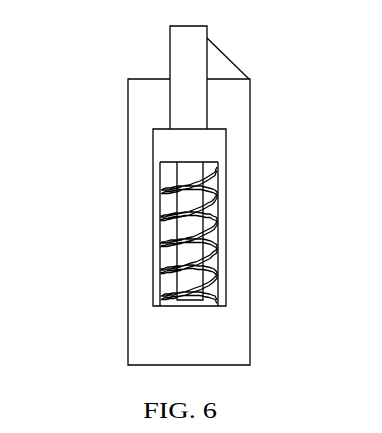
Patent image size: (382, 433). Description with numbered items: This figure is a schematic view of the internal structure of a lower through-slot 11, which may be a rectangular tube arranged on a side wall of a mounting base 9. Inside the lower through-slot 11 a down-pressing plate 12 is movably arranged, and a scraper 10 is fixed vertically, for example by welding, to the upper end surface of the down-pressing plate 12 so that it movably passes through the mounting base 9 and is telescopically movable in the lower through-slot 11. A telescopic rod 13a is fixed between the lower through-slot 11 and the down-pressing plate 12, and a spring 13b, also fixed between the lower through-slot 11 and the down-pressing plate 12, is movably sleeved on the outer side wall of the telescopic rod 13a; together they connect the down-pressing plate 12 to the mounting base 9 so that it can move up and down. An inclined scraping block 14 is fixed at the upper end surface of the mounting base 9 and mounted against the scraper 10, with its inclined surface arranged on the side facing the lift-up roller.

The mounting base 9 is at (145, 332).
The scraper 10 is at (178, 50).
The lower through-slot 11 is at (225, 248).
The down-pressing plate 12 is at (177, 148).
The telescopic rod 13a is at (182, 240).
The spring 13b is at (162, 278).
The inclined scraping block 14 is at (222, 68).